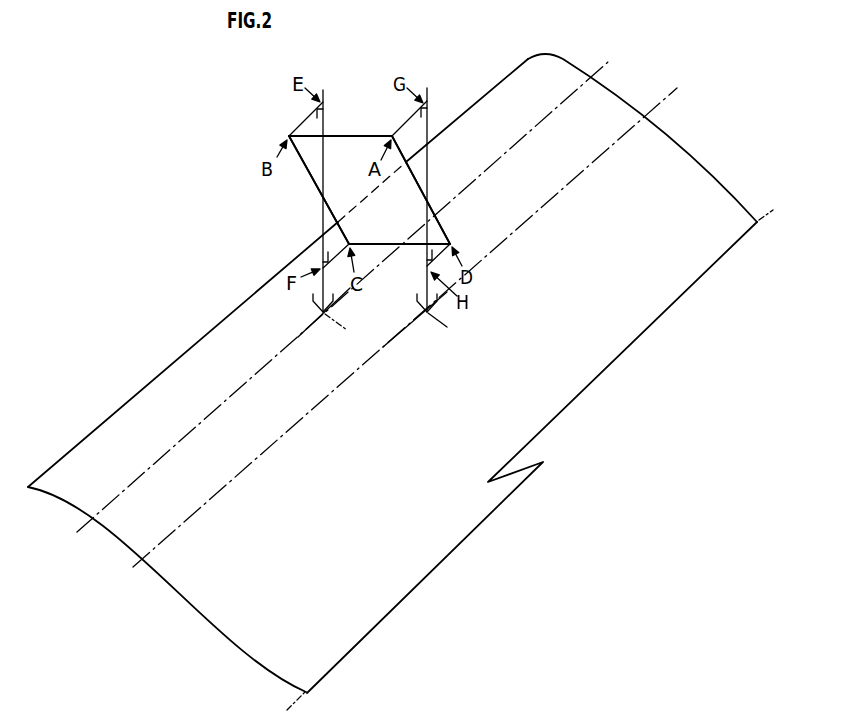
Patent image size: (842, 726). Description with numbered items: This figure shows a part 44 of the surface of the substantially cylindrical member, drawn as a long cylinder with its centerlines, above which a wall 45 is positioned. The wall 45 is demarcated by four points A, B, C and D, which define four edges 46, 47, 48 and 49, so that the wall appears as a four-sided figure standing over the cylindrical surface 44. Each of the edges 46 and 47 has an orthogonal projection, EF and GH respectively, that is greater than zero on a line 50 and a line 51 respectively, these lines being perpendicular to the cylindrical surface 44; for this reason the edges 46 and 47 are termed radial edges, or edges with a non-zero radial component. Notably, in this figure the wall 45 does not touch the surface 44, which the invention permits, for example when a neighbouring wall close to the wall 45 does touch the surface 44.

The surface part 44 is at (260, 622).
The wall 45 is at (333, 155).
The edge 46 is at (312, 178).
The edge 47 is at (440, 221).
The edge 48 is at (353, 135).
The edge 49 is at (397, 246).
The line 50 is at (331, 84).
The line 51 is at (434, 83).